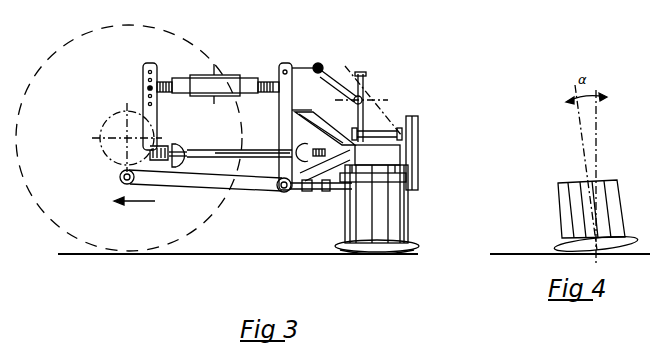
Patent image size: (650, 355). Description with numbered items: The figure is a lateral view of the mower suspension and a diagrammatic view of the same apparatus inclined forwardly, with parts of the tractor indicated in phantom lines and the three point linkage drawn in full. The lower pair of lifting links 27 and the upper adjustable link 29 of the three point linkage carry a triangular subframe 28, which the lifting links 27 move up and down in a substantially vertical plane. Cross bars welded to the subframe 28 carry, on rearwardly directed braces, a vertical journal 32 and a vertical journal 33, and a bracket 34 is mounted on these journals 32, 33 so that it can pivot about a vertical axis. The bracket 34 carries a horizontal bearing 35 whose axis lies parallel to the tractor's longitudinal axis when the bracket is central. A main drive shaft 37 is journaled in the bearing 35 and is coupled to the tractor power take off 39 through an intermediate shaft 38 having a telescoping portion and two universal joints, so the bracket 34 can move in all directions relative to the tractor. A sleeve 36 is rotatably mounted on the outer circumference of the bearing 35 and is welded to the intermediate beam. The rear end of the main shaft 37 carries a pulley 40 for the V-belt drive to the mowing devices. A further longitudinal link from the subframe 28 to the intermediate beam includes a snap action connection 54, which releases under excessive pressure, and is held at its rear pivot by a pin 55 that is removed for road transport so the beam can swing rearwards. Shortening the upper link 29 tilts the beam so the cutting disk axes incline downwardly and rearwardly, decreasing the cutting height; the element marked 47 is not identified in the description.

The lower pair of lifting links 27 is at (238, 182).
The triangular subframe 28 is at (282, 98).
The upper adjustable link 29 is at (233, 76).
The vertical journal 32 is at (307, 88).
The vertical journal 33 is at (270, 170).
The bracket 34 is at (324, 134).
The horizontal bearing 35 is at (342, 184).
The sleeve 36 is at (388, 120).
The main drive shaft 37 is at (310, 147).
The intermediate shaft 38 is at (258, 150).
The tractor power take off 39 is at (168, 145).
The pulley 40 is at (422, 184).
The arm 47 is at (342, 78).
The snap action connection 54 is at (325, 190).
The pin 55 is at (410, 195).